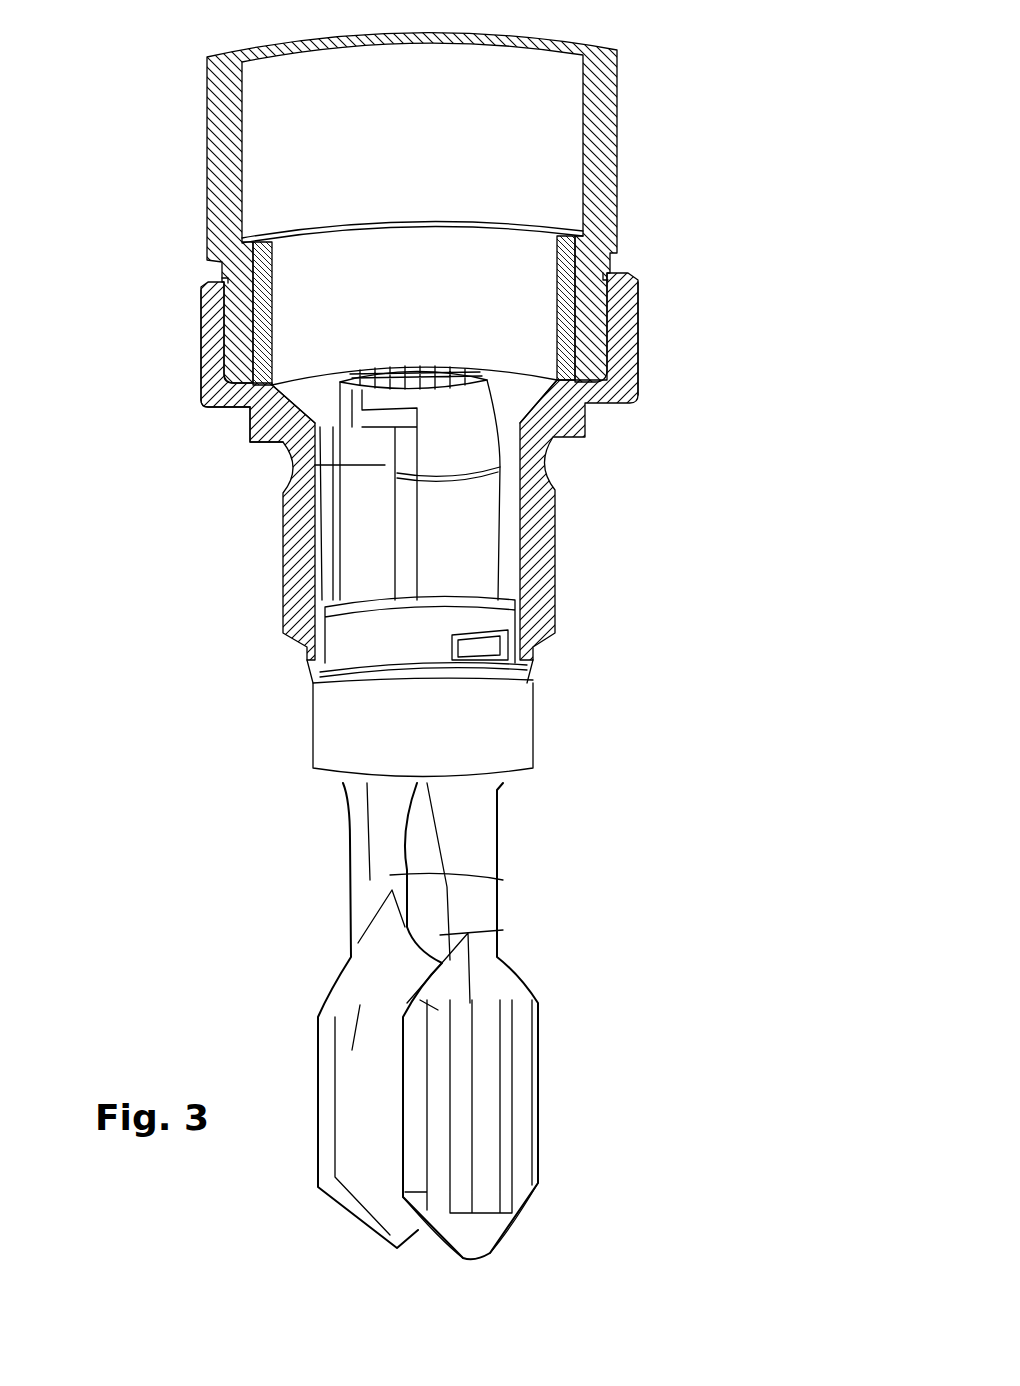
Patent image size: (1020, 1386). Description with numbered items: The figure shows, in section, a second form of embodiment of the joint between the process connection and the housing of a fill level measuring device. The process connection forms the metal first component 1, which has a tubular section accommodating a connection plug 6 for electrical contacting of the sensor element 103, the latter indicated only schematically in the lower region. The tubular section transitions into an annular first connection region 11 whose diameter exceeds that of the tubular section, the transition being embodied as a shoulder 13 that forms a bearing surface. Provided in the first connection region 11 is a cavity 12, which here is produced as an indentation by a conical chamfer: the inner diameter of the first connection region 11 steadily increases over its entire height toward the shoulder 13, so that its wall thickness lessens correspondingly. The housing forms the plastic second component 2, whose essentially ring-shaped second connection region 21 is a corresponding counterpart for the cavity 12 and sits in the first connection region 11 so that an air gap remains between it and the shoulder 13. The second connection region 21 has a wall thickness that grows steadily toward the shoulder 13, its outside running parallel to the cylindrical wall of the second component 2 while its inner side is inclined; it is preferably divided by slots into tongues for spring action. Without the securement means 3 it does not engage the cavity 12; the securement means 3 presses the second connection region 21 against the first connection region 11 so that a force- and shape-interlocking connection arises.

The first component 1 is at (302, 580).
The second component 2 is at (207, 103).
The securement means 3 is at (300, 372).
The connection plug 6 is at (487, 530).
The first connection region 11 is at (648, 327).
The cavity 12 is at (210, 373).
The shoulder 13 is at (230, 400).
The second connection region 21 is at (587, 273).
The sensor element 103 is at (286, 929).